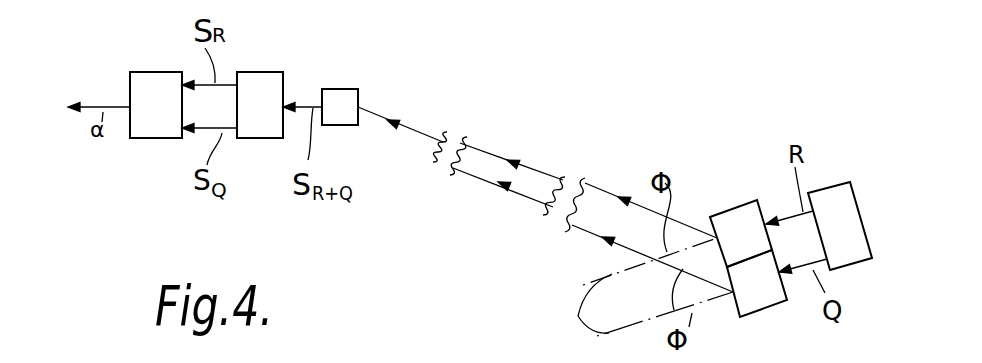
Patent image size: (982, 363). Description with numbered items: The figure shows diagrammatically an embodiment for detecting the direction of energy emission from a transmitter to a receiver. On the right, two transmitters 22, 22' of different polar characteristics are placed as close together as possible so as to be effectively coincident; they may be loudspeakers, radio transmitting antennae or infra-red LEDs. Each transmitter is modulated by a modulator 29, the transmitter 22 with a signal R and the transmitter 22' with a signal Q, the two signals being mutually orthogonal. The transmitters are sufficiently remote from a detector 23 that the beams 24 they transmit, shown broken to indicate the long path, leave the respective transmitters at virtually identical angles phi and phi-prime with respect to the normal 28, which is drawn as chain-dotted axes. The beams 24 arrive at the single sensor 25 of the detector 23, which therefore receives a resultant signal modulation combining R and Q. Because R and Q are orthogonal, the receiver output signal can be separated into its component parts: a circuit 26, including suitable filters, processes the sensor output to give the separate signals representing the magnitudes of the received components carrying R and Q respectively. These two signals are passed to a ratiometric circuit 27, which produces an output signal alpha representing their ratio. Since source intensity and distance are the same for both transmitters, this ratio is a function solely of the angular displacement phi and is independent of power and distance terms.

The transmitter 22 is at (739, 203).
The transmitter 22' is at (758, 306).
The detector 23 is at (233, 73).
The beams 24 is at (420, 130).
The sensor 25 is at (343, 89).
The circuit 26 is at (270, 120).
The ratiometric circuit 27 is at (165, 120).
The normal 28 is at (578, 316).
The modulator 29 is at (819, 227).